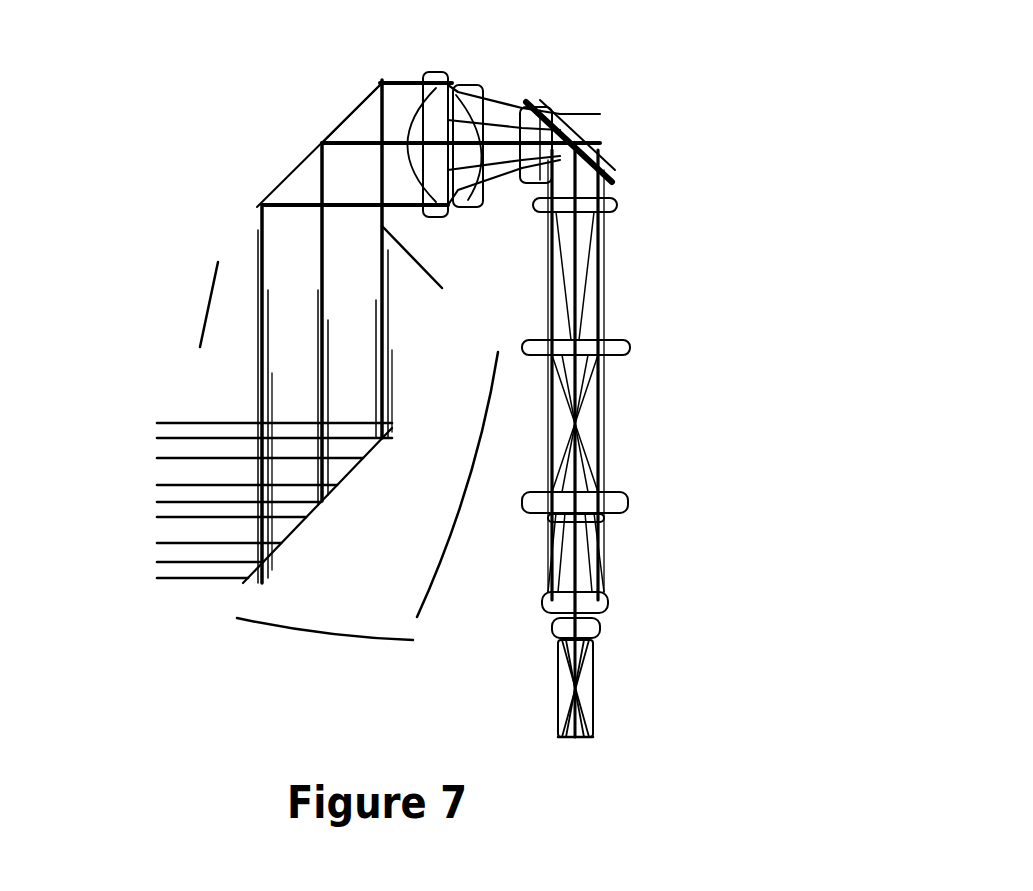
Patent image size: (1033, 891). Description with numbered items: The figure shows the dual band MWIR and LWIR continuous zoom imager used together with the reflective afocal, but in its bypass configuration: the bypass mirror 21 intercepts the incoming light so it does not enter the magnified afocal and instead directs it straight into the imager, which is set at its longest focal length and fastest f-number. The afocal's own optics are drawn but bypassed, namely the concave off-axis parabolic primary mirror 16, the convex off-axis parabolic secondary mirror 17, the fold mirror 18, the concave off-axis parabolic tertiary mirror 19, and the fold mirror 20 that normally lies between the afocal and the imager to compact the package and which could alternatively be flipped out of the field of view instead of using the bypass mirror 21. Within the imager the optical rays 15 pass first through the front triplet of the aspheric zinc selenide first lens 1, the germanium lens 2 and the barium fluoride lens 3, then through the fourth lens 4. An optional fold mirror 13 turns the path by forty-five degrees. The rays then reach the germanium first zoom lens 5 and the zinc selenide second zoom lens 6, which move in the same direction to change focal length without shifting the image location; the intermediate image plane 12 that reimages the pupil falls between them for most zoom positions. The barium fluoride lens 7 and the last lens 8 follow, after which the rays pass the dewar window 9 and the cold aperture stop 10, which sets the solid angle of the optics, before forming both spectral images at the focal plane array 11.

The first lens 1 is at (420, 117).
The germanium lens 2 is at (474, 119).
The barium fluoride lens 3 is at (529, 113).
The fourth lens 4 is at (598, 211).
The first zoom lens 5 is at (599, 354).
The second zoom lens 6 is at (605, 492).
The barium fluoride lens 7 is at (618, 526).
The last lens 8 is at (598, 591).
The dewar window 9 is at (609, 627).
The aperture stop 10 is at (618, 688).
The focal plane array 11 is at (611, 751).
The intermediate image plane 12 is at (625, 395).
The fold mirror 13 is at (594, 141).
The optical rays 15 is at (226, 500).
The primary mirror 16 is at (457, 484).
The secondary mirror 17 is at (181, 304).
The fold mirror 18 is at (431, 257).
The tertiary mirror 19 is at (325, 658).
The fold mirror 20 is at (428, 314).
The bypass mirror 21 is at (317, 505).